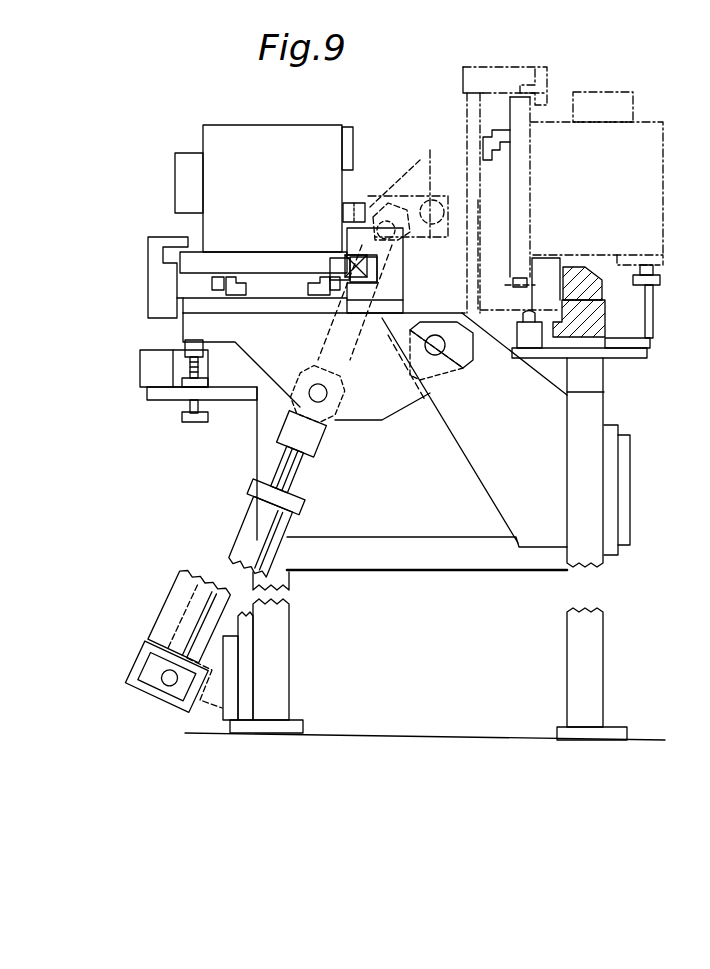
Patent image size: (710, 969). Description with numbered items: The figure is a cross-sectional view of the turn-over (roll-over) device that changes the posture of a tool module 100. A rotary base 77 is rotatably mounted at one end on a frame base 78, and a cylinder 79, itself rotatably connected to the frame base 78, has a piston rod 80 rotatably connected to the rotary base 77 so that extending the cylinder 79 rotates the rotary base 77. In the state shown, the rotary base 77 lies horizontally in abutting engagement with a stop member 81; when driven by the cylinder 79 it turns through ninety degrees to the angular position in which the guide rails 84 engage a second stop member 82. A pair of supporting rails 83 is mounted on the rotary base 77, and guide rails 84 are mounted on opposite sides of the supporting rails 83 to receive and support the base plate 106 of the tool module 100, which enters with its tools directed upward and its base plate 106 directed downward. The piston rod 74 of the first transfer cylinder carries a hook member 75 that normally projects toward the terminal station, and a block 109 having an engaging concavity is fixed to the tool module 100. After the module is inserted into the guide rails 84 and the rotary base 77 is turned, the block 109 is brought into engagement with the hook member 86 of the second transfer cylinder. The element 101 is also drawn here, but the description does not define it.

The piston rod 74 is at (433, 184).
The hook member 75 is at (398, 194).
The rotary base 77 is at (380, 421).
The frame base 78 is at (598, 495).
The cylinder 79 is at (240, 545).
The piston rod 80 is at (306, 466).
The stop member 81 is at (190, 408).
The stop member 82 is at (533, 336).
The supporting rails 83 is at (307, 297).
The guide rails 84 is at (153, 279).
The hook member 86 is at (603, 292).
The tool module 100 is at (292, 136).
The stop member 101 is at (185, 178).
The base plate 106 is at (253, 263).
The block 109 is at (350, 213).